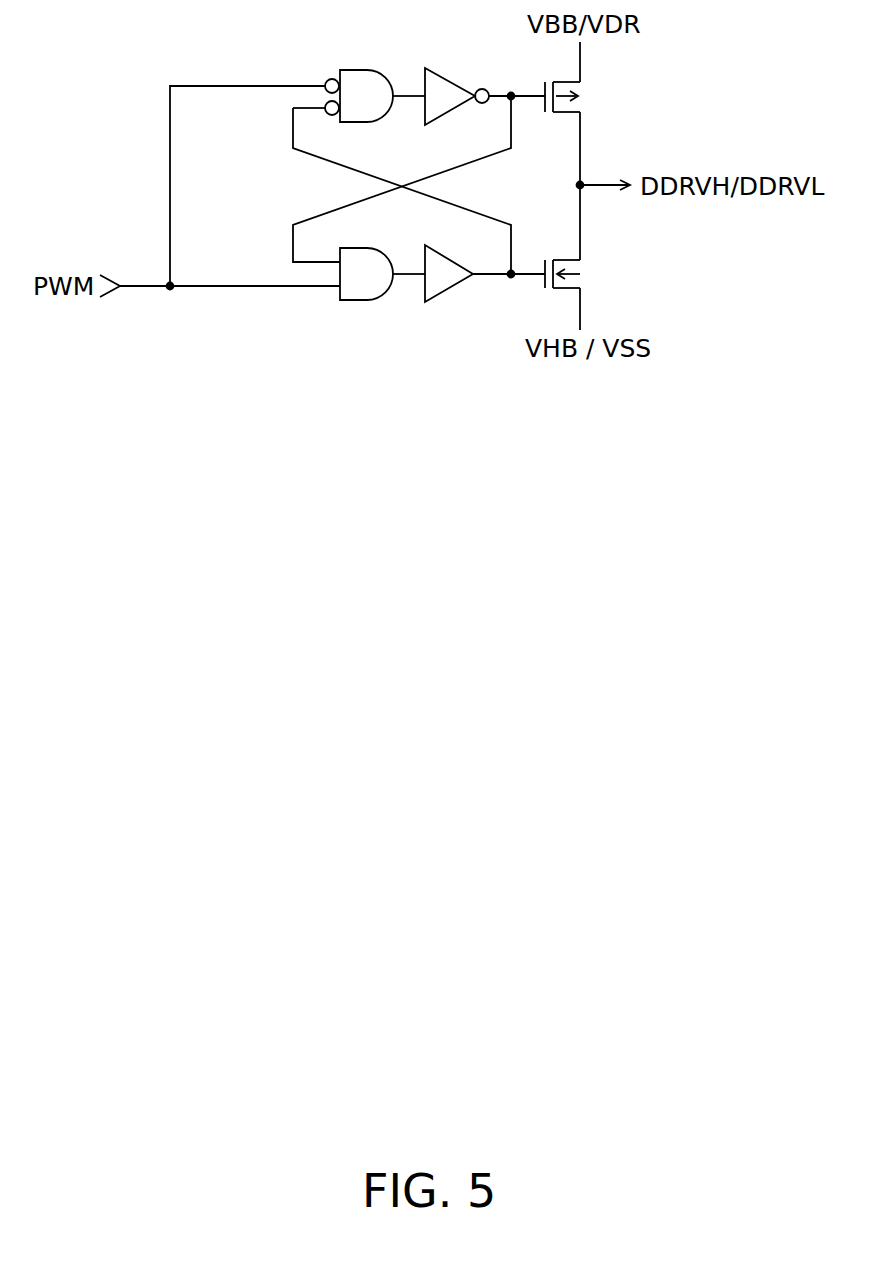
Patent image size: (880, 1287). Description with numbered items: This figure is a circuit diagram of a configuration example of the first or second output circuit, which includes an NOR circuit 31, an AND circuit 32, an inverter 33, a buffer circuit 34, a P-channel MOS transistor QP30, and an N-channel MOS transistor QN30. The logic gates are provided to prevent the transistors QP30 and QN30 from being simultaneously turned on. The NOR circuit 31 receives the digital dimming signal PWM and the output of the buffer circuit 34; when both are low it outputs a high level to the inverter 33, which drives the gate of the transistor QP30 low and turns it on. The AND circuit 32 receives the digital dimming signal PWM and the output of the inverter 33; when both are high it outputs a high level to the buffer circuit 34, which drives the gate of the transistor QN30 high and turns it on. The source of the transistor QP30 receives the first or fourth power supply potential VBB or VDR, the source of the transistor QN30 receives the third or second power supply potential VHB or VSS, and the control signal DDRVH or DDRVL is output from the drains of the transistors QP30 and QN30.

The NOR circuit 31 is at (362, 70).
The AND circuit 32 is at (357, 300).
The inverter 33 is at (452, 81).
The buffer circuit 34 is at (447, 290).
The P-channel MOS transistor QP30 is at (599, 77).
The N-channel MOS transistor QN30 is at (601, 294).